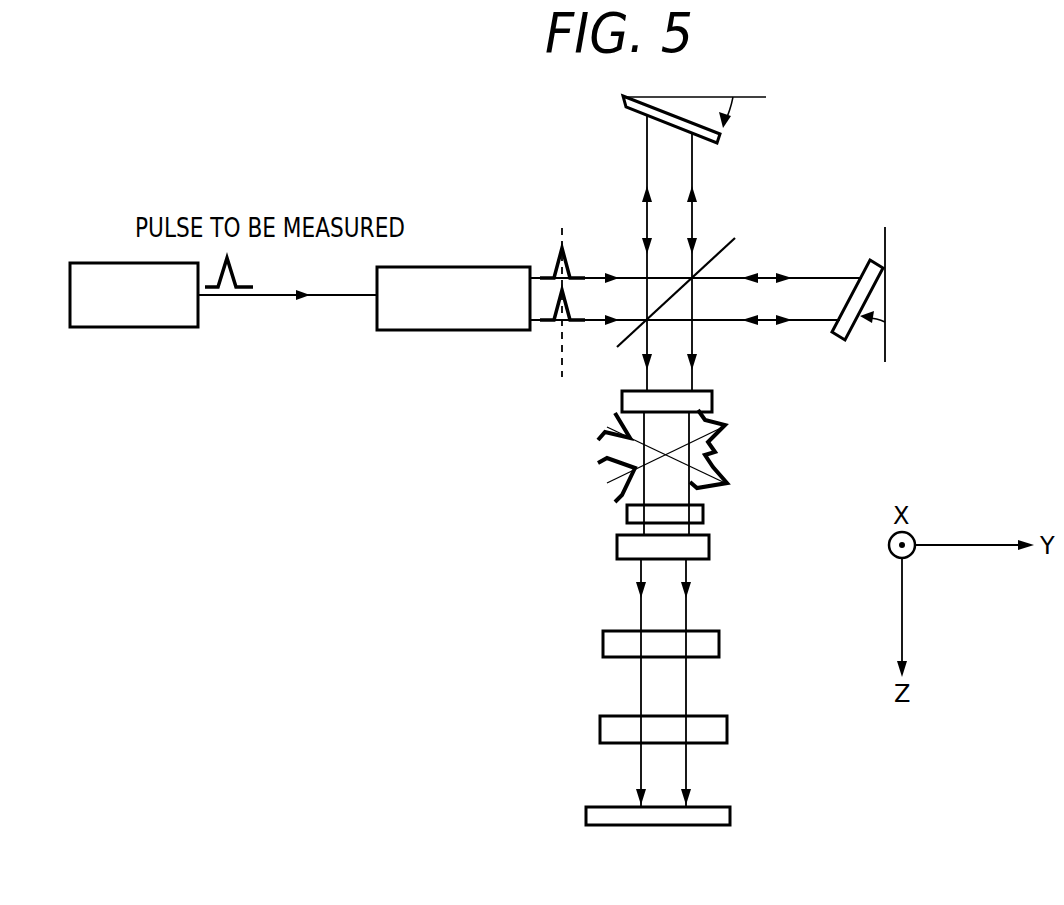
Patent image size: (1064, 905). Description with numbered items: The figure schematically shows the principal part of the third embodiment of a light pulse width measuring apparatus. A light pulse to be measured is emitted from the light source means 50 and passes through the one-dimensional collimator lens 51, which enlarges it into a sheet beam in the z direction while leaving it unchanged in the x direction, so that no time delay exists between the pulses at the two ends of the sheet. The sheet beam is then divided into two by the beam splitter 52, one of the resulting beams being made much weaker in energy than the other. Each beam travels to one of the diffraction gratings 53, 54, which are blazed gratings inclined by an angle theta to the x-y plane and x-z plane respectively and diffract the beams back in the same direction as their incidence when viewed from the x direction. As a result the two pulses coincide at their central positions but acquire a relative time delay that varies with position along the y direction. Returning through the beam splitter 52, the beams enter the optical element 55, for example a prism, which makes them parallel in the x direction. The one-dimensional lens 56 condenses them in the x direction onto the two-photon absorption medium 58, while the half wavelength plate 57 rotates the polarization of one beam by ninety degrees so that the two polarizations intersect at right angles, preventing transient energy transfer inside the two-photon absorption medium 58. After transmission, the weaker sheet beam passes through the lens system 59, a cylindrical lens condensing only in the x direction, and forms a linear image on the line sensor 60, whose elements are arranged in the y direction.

The light source means 50 is at (90, 327).
The one-dimensional collimator lens 51 is at (398, 330).
The beam splitter 52 is at (727, 250).
The diffraction grating 53 is at (622, 104).
The diffraction grating 54 is at (877, 266).
The optical element 55 is at (712, 400).
The one-dimensional lens 56 is at (627, 514).
The half wavelength plate 57 is at (617, 548).
The two-photon absorption medium 58 is at (603, 647).
The lens system 59 is at (600, 731).
The line sensor 60 is at (730, 814).